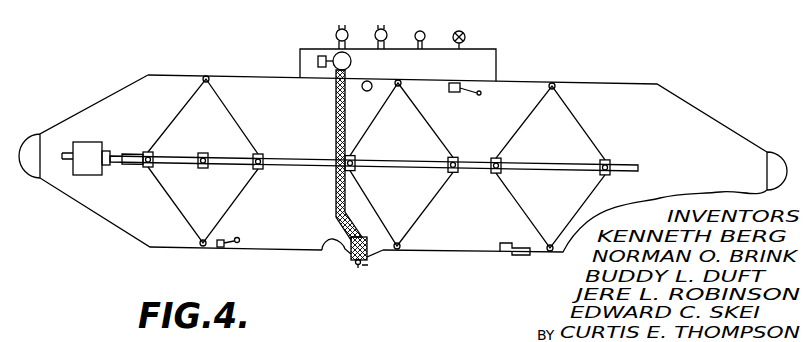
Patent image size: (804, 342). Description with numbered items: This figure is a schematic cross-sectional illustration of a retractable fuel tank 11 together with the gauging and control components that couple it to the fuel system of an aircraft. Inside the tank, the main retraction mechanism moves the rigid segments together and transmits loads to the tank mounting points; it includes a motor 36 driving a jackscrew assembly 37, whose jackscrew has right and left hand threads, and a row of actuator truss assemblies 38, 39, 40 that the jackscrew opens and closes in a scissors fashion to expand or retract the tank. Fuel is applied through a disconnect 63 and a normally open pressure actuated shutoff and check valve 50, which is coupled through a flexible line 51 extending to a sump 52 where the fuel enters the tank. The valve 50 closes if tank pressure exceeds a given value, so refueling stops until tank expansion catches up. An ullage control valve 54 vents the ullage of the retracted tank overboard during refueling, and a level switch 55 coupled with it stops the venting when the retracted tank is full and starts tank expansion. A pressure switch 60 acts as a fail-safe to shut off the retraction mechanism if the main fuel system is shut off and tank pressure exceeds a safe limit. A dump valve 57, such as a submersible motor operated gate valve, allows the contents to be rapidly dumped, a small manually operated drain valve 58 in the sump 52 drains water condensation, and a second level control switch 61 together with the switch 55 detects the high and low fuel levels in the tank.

The hull 11 is at (627, 84).
The motor 36 is at (92, 177).
The jackscrew assembly 37 is at (131, 151).
The actuator truss assembly 38 is at (234, 121).
The actuator truss assembly 39 is at (412, 106).
The actuator truss assembly 40 is at (583, 133).
The pressure actuated shutoff and check valve 50 is at (349, 56).
The flexible line 51 is at (336, 100).
The sump 52 is at (323, 250).
The ullage control valve 54 is at (465, 34).
The level switch 55 is at (455, 92).
The dump valve 57 is at (514, 255).
The drain valve 58 is at (358, 268).
The pressure switch 60 is at (367, 91).
The level control switch 61 is at (221, 248).
The disconnect 63 is at (338, 32).